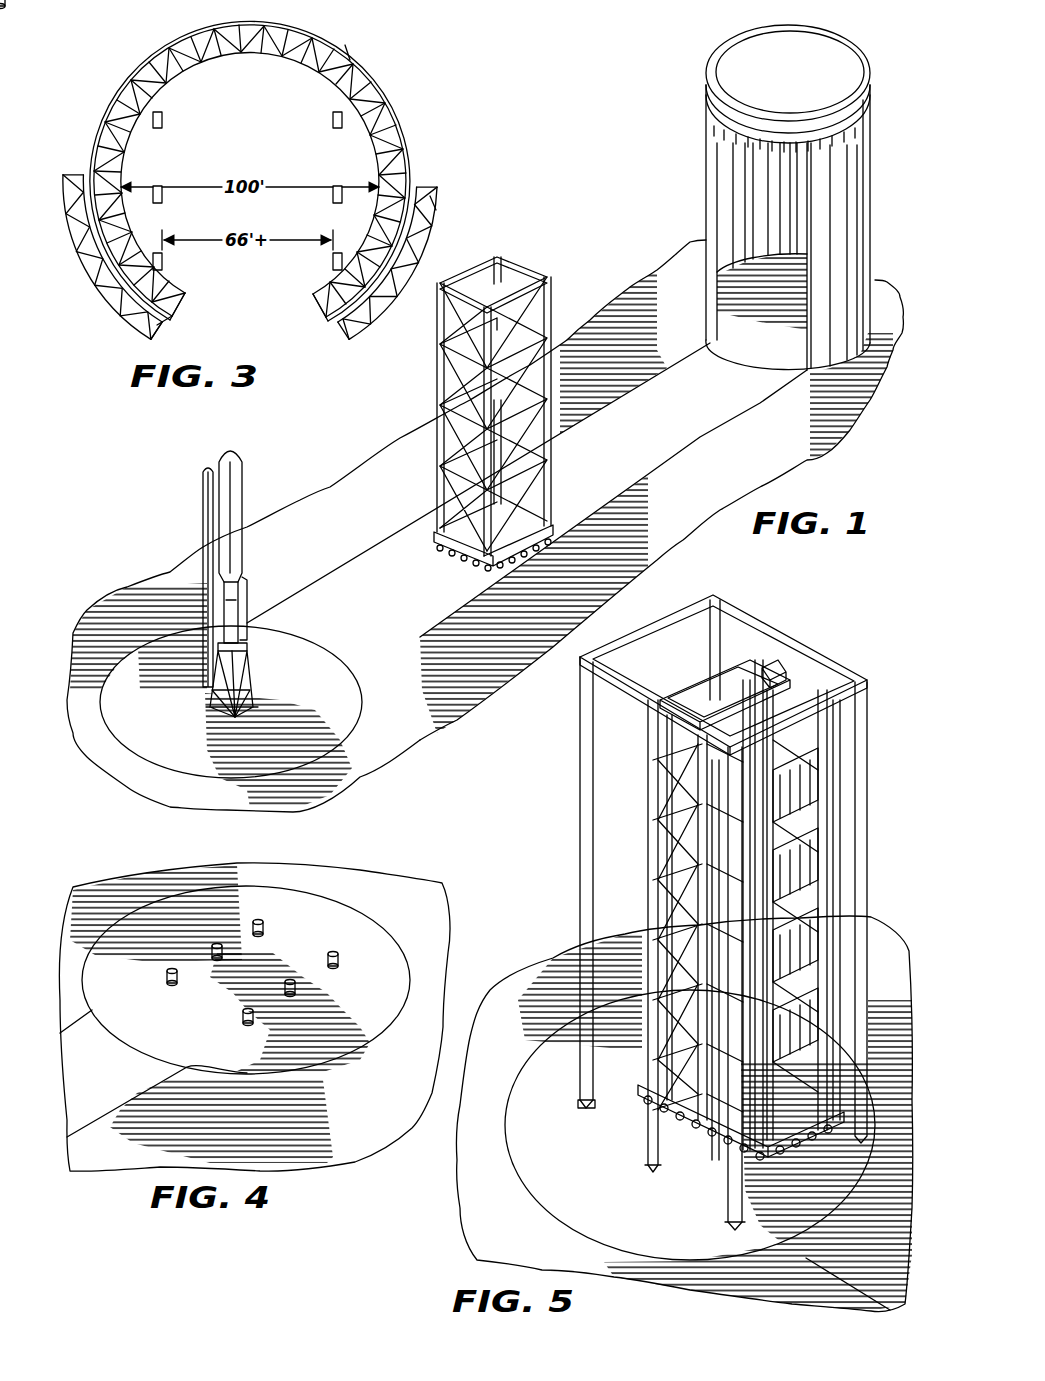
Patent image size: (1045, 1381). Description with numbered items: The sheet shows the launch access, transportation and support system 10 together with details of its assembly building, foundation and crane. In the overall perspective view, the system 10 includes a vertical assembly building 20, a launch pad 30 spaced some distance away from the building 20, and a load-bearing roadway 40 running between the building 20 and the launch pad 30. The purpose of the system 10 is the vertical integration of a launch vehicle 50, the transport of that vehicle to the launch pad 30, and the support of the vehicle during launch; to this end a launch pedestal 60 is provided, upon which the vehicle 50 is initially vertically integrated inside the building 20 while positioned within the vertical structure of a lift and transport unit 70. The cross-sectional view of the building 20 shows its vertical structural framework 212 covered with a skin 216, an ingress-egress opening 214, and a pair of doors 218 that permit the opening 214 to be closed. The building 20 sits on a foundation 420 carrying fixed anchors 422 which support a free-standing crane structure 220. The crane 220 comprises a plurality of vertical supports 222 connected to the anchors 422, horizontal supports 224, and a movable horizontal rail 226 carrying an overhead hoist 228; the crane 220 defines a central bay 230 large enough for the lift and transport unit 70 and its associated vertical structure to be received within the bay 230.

In FIG. 1, the launch access, transportation and support system 10 is at (674, 88).
In FIG. 3, the vertical assembly building 20 is at (93, 81).
In FIG. 1, the vertical assembly building 20 is at (872, 98).
In FIG. 1, the launch pad 30 is at (132, 675).
In FIG. 1, the load-bearing roadway 40 is at (685, 442).
In FIG. 4, the load-bearing roadway 40 is at (113, 1078).
In FIG. 5, the load-bearing roadway 40 is at (893, 1261).
In FIG. 1, the launch vehicle 50 is at (243, 470).
In FIG. 1, the launch pedestal 60 is at (247, 657).
In FIG. 1, the lift and transport unit 70 is at (441, 364).
In FIG. 5, the lift and transport unit 70 is at (813, 1017).
In FIG. 3, the vertical structural framework 212 is at (315, 52).
In FIG. 3, the ingress-egress opening 214 is at (158, 322).
In FIG. 3, the skin 216 is at (348, 45).
In FIG. 3, the doors 218 is at (105, 300).
In FIG. 5, the free-standing crane structure 220 is at (738, 899).
In FIG. 5, the vertical supports 222 is at (648, 760).
In FIG. 5, the horizontal supports 224 is at (718, 596).
In FIG. 5, the movable horizontal rail 226 is at (793, 667).
In FIG. 5, the overhead hoist 228 is at (767, 657).
In FIG. 5, the central bay 230 is at (613, 1090).
In FIG. 4, the foundation 420 is at (298, 908).
In FIG. 5, the foundation 420 is at (597, 1223).
In FIG. 3, the fixed anchors 422 is at (160, 185).
In FIG. 4, the fixed anchors 422 is at (292, 985).
In FIG. 5, the fixed anchors 422 is at (725, 1218).